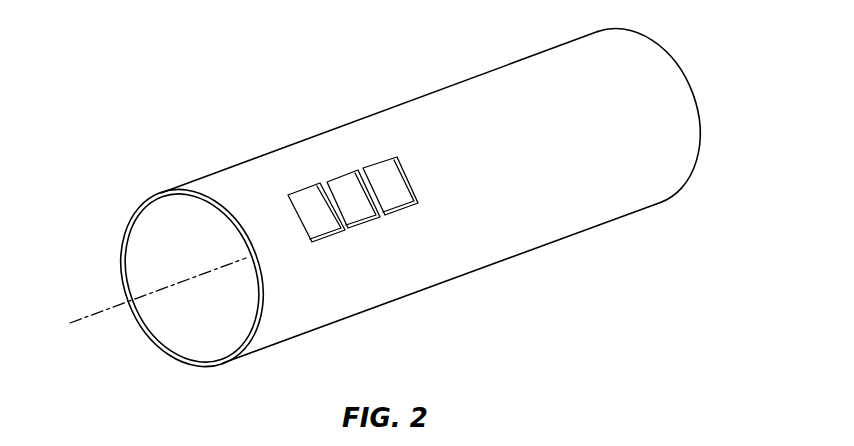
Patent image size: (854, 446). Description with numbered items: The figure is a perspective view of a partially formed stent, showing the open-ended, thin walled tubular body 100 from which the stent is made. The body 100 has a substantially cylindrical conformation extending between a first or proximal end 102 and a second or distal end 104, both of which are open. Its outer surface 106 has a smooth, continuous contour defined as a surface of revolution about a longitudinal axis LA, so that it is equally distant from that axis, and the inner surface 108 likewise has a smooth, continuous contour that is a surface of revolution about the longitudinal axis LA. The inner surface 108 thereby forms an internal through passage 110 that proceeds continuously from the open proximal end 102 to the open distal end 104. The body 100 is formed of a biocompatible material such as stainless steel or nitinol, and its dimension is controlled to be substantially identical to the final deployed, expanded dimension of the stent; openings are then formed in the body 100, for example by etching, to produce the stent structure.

The tubular body 100 is at (255, 66).
The proximal end 102 is at (194, 366).
The distal end 104 is at (698, 128).
The outer surface 106 is at (300, 147).
The inner surface 108 is at (208, 252).
The internal through passage 110 is at (171, 330).
The longitudinal axis LA is at (88, 315).